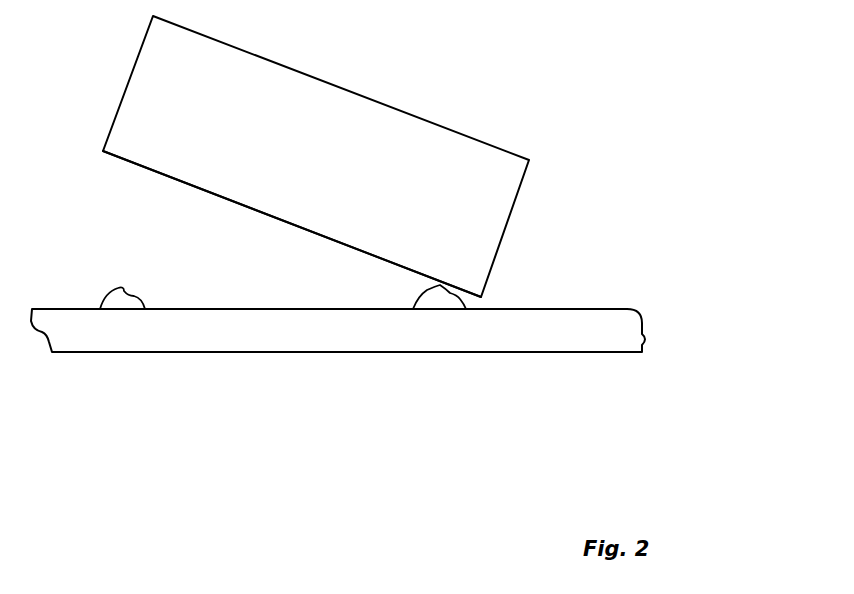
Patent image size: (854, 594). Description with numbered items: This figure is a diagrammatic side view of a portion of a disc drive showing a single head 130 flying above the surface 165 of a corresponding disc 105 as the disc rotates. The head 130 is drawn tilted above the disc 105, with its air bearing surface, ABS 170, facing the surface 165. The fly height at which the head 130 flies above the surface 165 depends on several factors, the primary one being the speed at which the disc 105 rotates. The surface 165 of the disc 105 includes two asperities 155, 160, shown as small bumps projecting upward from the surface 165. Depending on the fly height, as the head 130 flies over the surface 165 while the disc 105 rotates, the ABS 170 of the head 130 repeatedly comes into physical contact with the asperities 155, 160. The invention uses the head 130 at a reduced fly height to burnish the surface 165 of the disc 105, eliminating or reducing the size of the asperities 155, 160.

The disc 105 is at (642, 327).
The head 130 is at (444, 78).
The asperity 155 is at (157, 282).
The asperity 160 is at (423, 298).
The surface 165 is at (531, 309).
The ABS 170 is at (303, 230).